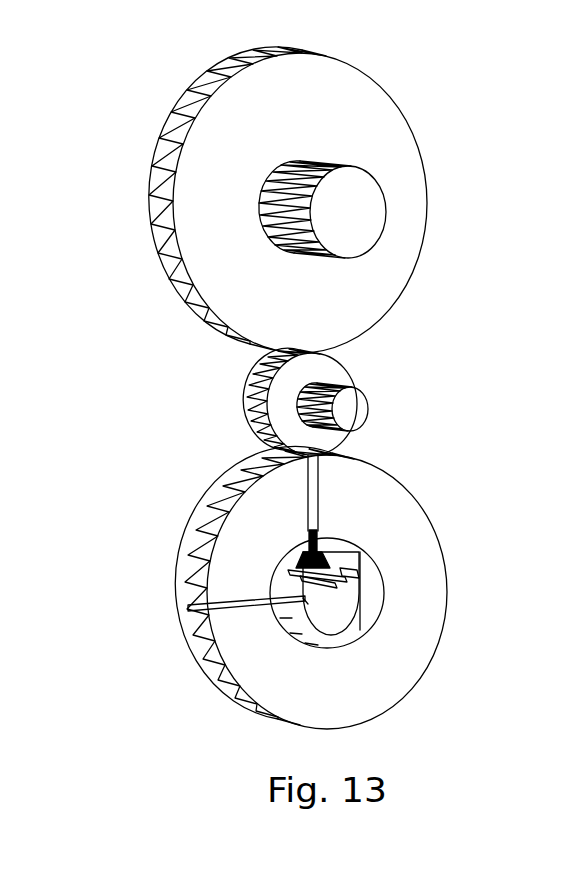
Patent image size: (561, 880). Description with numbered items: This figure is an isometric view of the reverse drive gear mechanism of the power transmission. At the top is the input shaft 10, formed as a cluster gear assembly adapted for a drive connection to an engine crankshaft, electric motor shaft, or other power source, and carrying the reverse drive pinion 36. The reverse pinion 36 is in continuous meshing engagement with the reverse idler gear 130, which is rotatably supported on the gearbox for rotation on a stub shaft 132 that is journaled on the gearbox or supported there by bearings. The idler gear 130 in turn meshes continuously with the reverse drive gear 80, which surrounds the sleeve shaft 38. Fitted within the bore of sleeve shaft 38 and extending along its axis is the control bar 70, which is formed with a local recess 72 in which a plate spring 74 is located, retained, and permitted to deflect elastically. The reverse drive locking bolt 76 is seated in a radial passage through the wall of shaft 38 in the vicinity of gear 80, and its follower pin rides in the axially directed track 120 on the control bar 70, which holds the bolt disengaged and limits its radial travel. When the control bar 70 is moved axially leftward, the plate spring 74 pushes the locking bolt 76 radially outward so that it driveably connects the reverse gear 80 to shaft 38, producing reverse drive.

The reverse drive pinion 36 is at (316, 80).
The input shaft 10 is at (355, 210).
The reverse idler gear 130 is at (248, 393).
The gear hub 132 is at (355, 412).
The reverse drive locking bolt 76 is at (312, 532).
The sleeve shaft 38 is at (345, 540).
The reverse drive gear 80 is at (407, 663).
The control bar 70 is at (377, 608).
The axial track 120 is at (368, 573).
The local recess 72 is at (312, 532).
The plate spring 74 is at (382, 565).